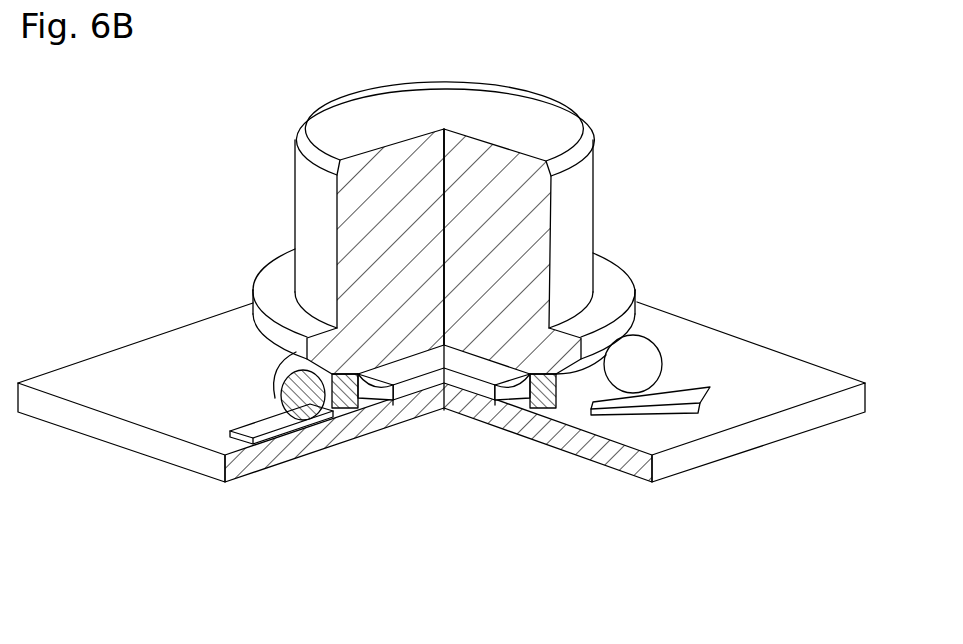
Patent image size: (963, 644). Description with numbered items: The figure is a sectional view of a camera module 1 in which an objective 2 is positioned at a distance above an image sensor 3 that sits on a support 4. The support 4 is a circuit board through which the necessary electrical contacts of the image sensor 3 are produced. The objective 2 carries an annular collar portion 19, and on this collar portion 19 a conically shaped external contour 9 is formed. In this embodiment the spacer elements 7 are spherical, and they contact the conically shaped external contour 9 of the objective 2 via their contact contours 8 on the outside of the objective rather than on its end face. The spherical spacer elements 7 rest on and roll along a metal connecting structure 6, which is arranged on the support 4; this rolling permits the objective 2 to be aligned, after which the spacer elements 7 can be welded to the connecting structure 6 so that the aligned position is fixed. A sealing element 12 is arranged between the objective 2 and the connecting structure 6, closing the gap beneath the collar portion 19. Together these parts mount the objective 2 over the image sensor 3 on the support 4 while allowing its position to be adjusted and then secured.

The camera module 1 is at (717, 83).
The objective 2 is at (462, 101).
The image sensor 3 is at (402, 390).
The support 4 is at (807, 413).
The metal connecting structure 6 is at (687, 393).
The spacer elements 7 is at (504, 347).
The contact contours 8 is at (640, 355).
The conically shaped external contour 9 is at (568, 380).
The sealing element 12 is at (538, 398).
The annular collar portion 19 is at (610, 280).